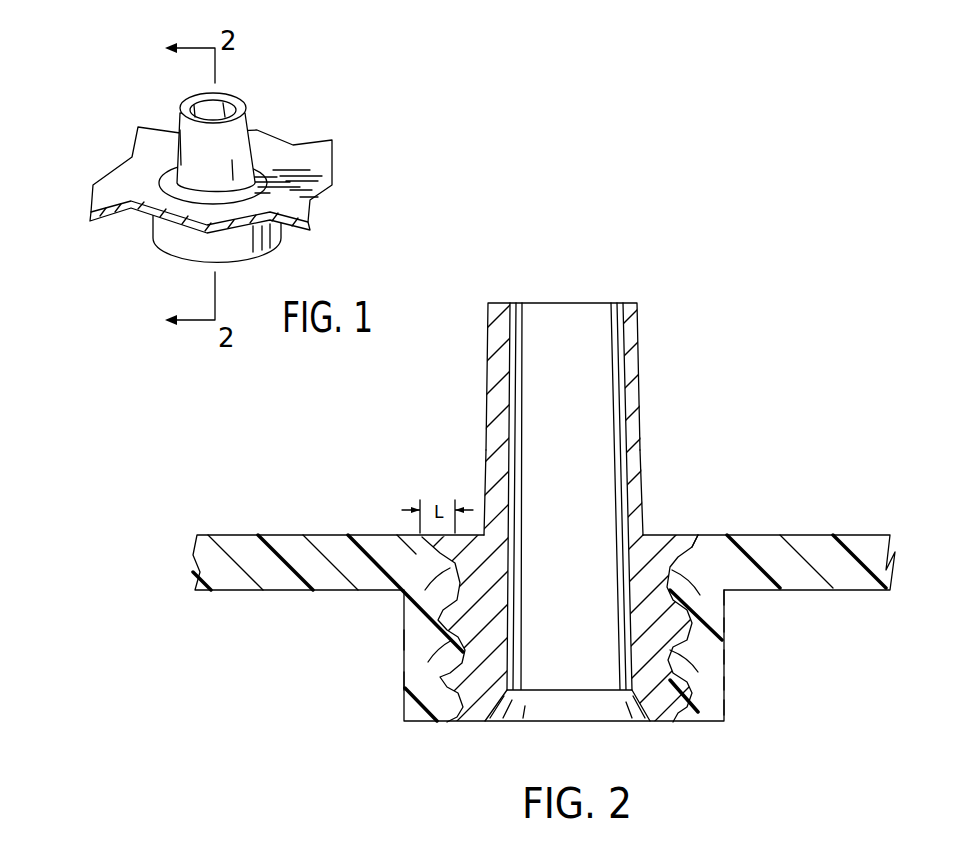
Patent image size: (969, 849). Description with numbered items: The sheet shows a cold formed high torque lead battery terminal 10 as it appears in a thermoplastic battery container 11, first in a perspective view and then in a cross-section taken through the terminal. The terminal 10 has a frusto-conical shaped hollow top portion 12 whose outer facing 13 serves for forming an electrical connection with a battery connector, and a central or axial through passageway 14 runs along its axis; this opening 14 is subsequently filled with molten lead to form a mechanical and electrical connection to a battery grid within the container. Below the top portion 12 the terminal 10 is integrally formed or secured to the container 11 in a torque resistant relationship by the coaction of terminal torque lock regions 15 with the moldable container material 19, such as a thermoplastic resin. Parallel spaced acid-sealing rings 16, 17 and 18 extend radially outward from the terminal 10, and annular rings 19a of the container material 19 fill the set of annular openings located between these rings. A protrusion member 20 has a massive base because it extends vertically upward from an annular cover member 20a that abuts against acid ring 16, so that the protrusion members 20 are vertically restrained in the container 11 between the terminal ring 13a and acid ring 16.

In FIG. 1, the battery terminal 10 is at (242, 99).
In FIG. 2, the battery terminal 10 is at (623, 303).
In FIG. 1, the battery container 11 is at (320, 148).
In FIG. 2, the battery container 11 is at (800, 540).
In FIG. 2, the top portion 12 is at (633, 424).
In FIG. 2, the outer facing 13 is at (645, 503).
In FIG. 2, the terminal ring 13a is at (683, 533).
In FIG. 2, the through passageway 14 is at (578, 463).
In FIG. 2, the torque lock regions 15 is at (407, 603).
In FIG. 2, the acid-sealing ring 16 is at (723, 657).
In FIG. 2, the acid-sealing ring 17 is at (723, 684).
In FIG. 2, the acid-sealing ring 18 is at (698, 720).
In FIG. 2, the container material 19 is at (412, 637).
In FIG. 2, the annular rings 19a is at (412, 680).
In FIG. 2, the protrusion member 20 is at (723, 598).
In FIG. 2, the annular cover member 20a is at (723, 627).